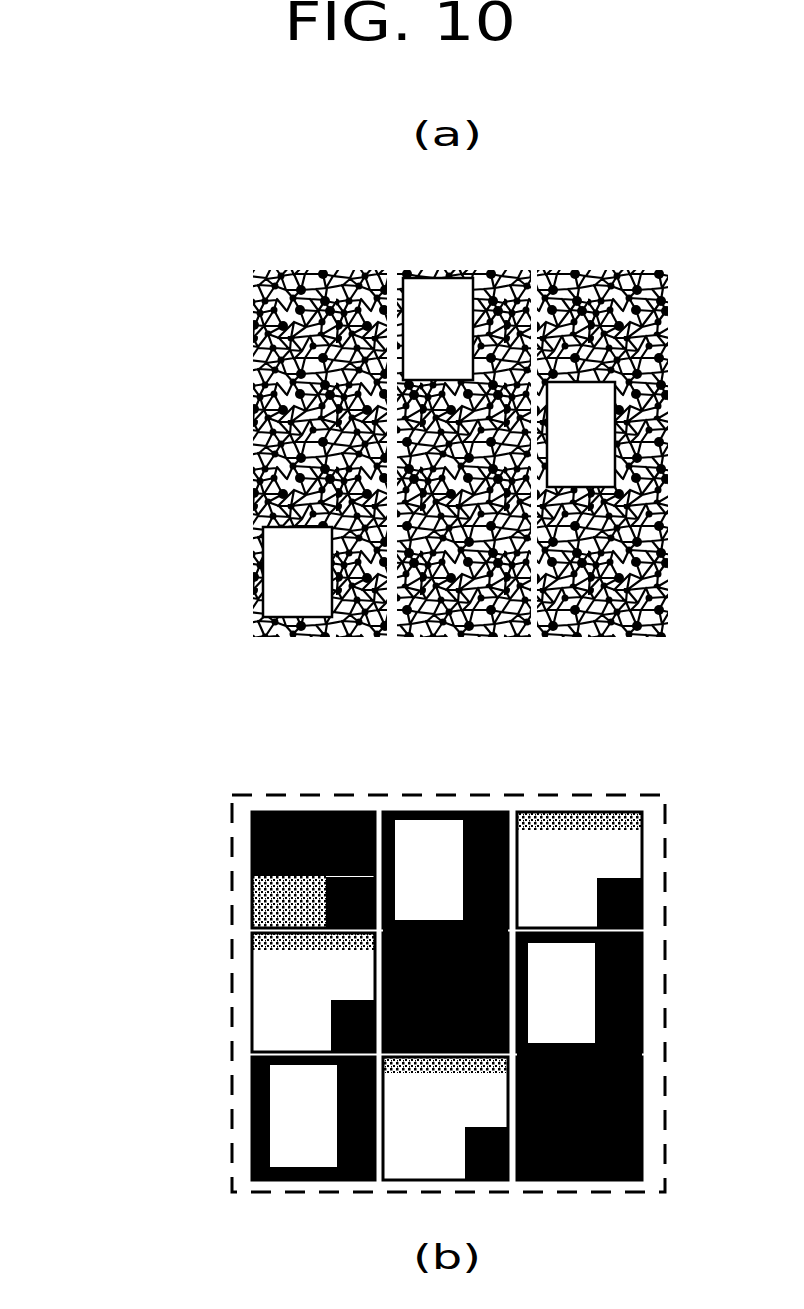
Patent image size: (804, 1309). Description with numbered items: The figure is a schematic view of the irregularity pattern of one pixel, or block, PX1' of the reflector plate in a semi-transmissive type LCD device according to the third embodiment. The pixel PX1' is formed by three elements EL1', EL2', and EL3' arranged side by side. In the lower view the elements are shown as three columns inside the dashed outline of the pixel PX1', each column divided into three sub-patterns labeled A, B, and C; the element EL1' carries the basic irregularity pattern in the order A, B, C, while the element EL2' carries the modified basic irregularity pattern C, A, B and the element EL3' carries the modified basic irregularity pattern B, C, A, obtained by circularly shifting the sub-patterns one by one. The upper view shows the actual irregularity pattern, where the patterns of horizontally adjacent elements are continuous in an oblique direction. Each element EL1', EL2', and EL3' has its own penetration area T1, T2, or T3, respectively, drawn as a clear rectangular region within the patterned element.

The penetration area T1 is at (285, 590).
The penetration area T2 is at (438, 315).
The penetration area T3 is at (595, 452).
The element EL1' is at (319, 725).
The element EL2' is at (457, 725).
The element EL3' is at (592, 725).
The pixel PX1' is at (359, 993).